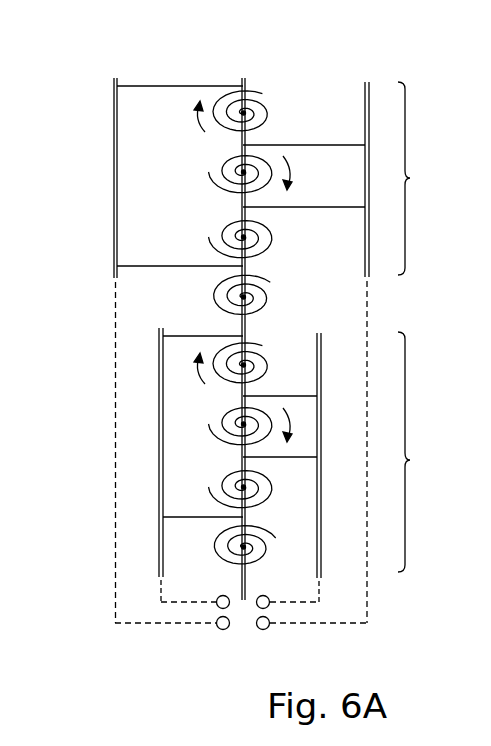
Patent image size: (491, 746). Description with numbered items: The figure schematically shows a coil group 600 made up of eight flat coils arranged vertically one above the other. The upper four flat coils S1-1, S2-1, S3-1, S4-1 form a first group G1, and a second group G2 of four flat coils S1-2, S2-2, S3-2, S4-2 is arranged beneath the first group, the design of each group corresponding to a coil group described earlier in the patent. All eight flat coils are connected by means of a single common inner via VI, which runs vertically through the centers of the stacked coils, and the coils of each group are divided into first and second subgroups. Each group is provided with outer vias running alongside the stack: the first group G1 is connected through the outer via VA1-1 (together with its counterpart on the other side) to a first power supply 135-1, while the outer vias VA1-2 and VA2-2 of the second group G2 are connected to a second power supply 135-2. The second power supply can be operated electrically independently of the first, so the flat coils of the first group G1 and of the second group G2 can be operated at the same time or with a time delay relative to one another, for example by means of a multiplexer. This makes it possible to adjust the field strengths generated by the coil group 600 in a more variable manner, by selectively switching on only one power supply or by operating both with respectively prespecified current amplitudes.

The common inner via VI is at (244, 78).
The outer via VA1-1 is at (113, 97).
The outer via VA1-2 is at (370, 97).
The outer via VA2-2 is at (322, 338).
The first group G1 is at (282, 178).
The second group G2 is at (305, 452).
The flat coil S1-1 is at (264, 92).
The flat coil S2-1 is at (210, 169).
The flat coil S3-1 is at (210, 230).
The flat coil S4-1 is at (278, 283).
The flat coil S1-2 is at (275, 341).
The flat coil S2-2 is at (210, 420).
The flat coil S3-2 is at (210, 482).
The flat coil S4-2 is at (276, 538).
The second power supply 135-2 is at (243, 604).
The first power supply 135-1 is at (245, 627).
The coil group 600 is at (402, 646).